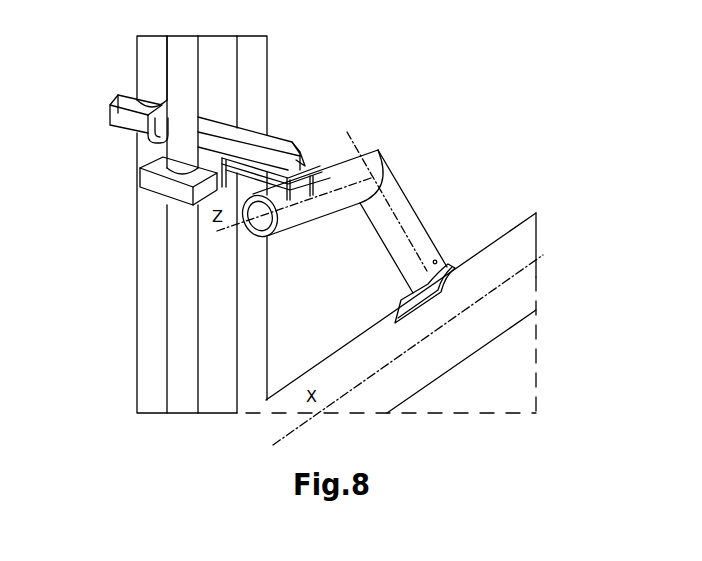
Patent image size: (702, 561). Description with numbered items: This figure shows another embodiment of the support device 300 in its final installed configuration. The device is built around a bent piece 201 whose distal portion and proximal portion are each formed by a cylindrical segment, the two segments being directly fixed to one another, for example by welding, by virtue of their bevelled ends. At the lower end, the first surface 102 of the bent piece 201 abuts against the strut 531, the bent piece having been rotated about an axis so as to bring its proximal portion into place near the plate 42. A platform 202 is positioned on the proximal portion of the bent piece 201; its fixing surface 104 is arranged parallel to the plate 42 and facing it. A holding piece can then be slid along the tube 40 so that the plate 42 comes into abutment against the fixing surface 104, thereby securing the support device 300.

The tube 40 is at (240, 67).
The plate 42 is at (308, 157).
The fixing surface 104 is at (328, 158).
The platform 202 is at (383, 130).
The bent piece 201 is at (424, 168).
The first surface 102 is at (395, 294).
The strut 531 is at (460, 372).
The support device 300 is at (496, 63).